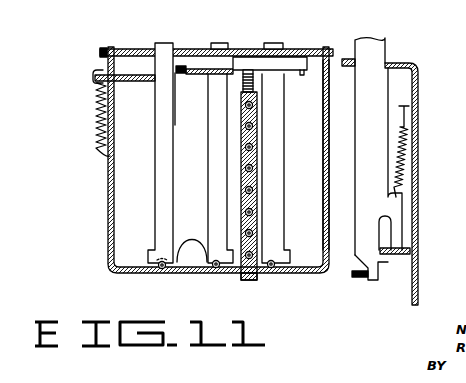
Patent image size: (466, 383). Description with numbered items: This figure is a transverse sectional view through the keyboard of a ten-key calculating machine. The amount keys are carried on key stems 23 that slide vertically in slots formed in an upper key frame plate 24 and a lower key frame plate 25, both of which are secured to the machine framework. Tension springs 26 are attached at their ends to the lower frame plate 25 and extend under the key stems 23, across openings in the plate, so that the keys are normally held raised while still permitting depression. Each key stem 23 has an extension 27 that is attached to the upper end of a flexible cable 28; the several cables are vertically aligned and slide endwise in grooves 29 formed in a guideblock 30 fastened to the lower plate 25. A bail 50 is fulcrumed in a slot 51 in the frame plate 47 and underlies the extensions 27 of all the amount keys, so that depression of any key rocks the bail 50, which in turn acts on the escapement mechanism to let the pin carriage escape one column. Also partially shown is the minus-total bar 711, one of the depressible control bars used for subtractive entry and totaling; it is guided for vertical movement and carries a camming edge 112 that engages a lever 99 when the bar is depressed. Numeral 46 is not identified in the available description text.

The key stem 23 is at (156, 198).
The upper key frame plate 24 is at (152, 49).
The lower key frame plate 25 is at (158, 270).
The tension springs 26 is at (272, 298).
The extension 27 is at (243, 58).
The flexible cable 28 is at (254, 80).
The grooves 29 is at (253, 128).
The guideblock 30 is at (242, 280).
The right frame wall 46 is at (328, 150).
The frame plate 47 is at (108, 246).
The bail 50 is at (180, 76).
The slot 51 is at (113, 82).
The lever 99 is at (358, 278).
The camming edge 112 is at (355, 268).
The minus-total bar 711 is at (388, 45).